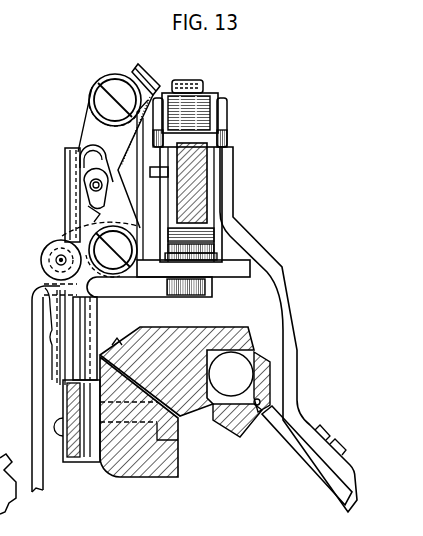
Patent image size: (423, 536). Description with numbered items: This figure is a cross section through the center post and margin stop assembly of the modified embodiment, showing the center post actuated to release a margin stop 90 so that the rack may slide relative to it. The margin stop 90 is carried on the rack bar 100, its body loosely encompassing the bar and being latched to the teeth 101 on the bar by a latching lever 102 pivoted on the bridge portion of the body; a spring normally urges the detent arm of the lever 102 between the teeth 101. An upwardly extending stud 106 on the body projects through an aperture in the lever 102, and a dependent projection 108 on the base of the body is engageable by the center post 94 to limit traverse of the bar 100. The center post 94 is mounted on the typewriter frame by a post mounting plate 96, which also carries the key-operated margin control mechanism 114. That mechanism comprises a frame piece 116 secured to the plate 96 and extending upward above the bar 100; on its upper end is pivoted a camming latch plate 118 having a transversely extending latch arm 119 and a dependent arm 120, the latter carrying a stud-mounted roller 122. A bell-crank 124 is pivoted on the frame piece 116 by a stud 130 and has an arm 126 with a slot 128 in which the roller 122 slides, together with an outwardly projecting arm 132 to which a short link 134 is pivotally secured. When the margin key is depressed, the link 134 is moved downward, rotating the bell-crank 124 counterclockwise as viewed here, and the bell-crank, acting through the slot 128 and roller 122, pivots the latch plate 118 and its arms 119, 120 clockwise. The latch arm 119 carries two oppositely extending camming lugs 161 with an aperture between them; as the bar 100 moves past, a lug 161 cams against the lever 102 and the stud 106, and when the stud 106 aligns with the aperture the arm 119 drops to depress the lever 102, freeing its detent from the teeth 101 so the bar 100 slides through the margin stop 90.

The margin stop 90 is at (223, 154).
The center post 94 is at (213, 287).
The post mounting plate 96 is at (88, 325).
The rack bar 100 is at (198, 190).
The teeth 101 is at (212, 160).
The latching lever 102 is at (225, 107).
The stud 106 is at (220, 123).
The dependent projection 108 is at (215, 245).
The key-operated margin control mechanism 114 is at (155, 75).
The frame piece 116 is at (65, 177).
The camming latch plate 118 is at (137, 67).
The transversely extending arm 119 is at (217, 98).
The dependent arm 120 is at (88, 128).
The roller 122 is at (85, 185).
The bell-crank 124 is at (82, 211).
The arm 126 is at (68, 148).
The slot 128 is at (82, 145).
The stud 130 is at (78, 230).
The arm 132 is at (76, 236).
The short link 134 is at (50, 280).
The camming lugs 161 is at (197, 78).